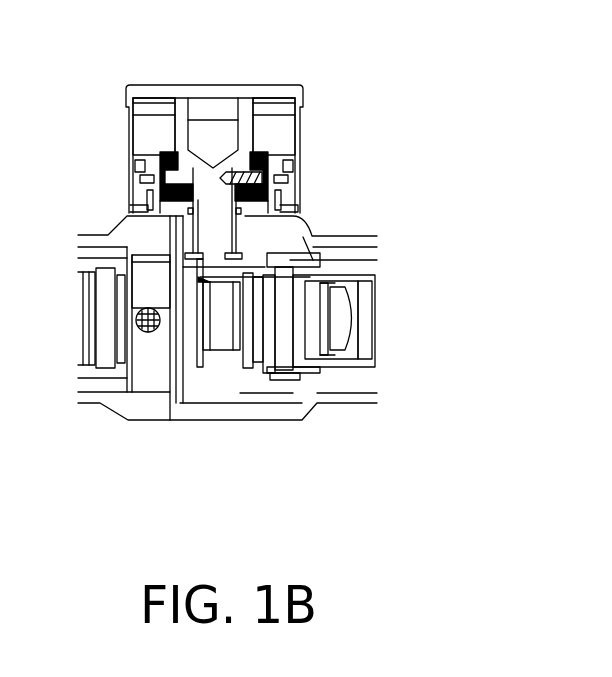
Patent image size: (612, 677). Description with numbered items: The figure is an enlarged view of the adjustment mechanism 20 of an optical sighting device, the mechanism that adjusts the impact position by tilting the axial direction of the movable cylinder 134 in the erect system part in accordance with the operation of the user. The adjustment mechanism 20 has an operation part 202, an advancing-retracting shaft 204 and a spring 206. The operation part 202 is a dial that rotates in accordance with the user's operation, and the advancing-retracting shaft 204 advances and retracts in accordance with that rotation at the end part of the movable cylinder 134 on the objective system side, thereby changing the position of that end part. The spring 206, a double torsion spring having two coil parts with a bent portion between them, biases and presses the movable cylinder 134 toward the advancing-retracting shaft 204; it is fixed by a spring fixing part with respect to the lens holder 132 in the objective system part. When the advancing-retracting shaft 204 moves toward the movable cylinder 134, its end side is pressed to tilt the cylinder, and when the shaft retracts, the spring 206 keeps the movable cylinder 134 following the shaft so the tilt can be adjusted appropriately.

The adjustment mechanism 20 is at (509, 57).
The operation part 202 is at (221, 88).
The advancing-retracting shaft 204 is at (217, 251).
The spring 206 is at (155, 317).
The lens holder 132 is at (103, 383).
The movable cylinder 134 is at (355, 370).